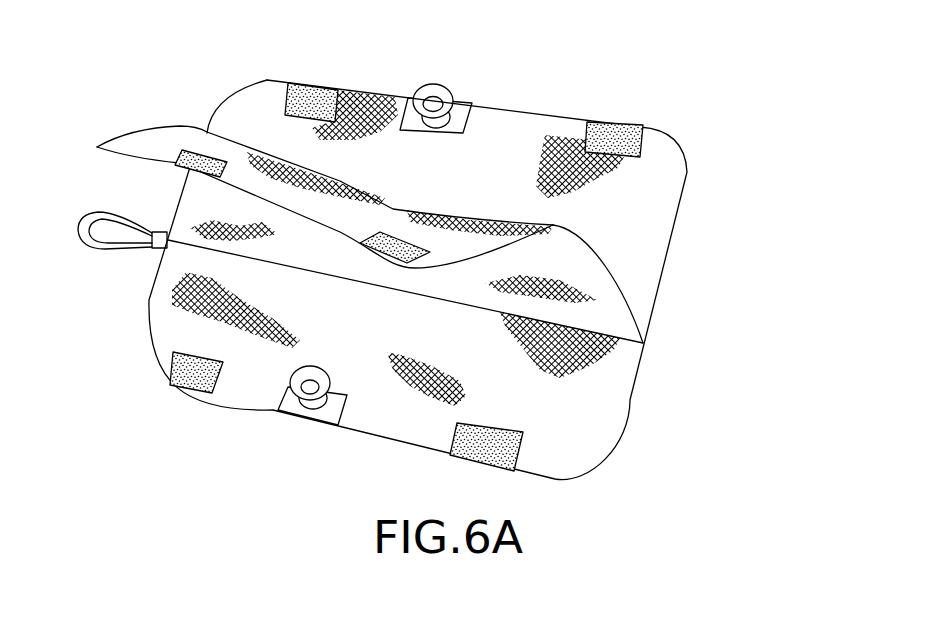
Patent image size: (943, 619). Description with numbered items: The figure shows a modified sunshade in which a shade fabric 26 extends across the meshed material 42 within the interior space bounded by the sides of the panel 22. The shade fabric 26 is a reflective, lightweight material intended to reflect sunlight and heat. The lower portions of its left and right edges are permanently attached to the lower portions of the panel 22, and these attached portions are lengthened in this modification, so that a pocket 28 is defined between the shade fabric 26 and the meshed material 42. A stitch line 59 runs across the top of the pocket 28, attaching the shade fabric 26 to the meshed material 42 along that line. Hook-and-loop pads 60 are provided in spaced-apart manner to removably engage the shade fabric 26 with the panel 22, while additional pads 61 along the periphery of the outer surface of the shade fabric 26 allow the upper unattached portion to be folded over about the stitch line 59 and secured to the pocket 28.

The panel 22 is at (724, 146).
The shade fabric 26 is at (151, 148).
The pocket 28 is at (187, 332).
The meshed material 42 is at (530, 110).
The stitch line 59 is at (357, 285).
The VELCRO pads 60 is at (622, 122).
The VELCRO pads 61 is at (521, 450).